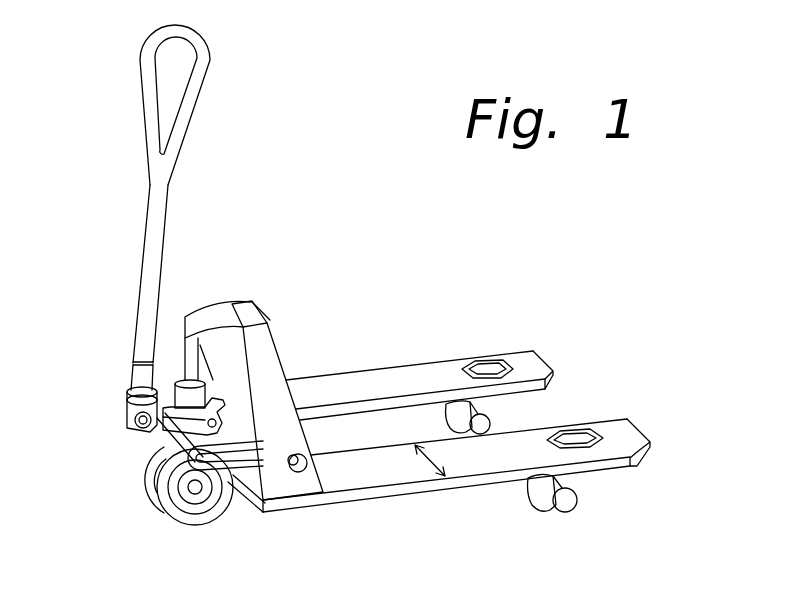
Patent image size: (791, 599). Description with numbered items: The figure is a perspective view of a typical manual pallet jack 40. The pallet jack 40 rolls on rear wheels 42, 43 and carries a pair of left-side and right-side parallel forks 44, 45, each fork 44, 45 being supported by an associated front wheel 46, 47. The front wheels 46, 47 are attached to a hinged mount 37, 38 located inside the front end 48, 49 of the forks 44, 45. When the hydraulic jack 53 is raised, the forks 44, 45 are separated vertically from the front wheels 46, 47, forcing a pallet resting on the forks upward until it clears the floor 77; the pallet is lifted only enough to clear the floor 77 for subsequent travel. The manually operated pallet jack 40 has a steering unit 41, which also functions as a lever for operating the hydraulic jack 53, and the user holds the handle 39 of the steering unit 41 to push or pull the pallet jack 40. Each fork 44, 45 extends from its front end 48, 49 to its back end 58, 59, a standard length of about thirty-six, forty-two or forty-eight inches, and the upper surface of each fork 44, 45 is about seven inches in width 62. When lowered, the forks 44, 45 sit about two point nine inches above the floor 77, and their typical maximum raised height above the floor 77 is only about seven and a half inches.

The handle 39 is at (212, 59).
The manual pallet jack 40 is at (279, 178).
The steering unit 41 is at (150, 213).
The hydraulic jack 53 is at (180, 357).
The back end of fork 58 is at (315, 392).
The left-side fork 44 is at (377, 387).
The front end of fork 48 is at (545, 350).
The hinged mount 37 is at (488, 403).
The front wheel 46 is at (485, 418).
The front end of fork 49 is at (643, 428).
The hinged mount 38 is at (567, 483).
The front wheel 47 is at (560, 511).
The right-side fork 45 is at (385, 472).
The width 62 is at (428, 452).
The back end of fork 59 is at (328, 475).
The rear wheel 42 is at (140, 457).
The rear wheel 43 is at (165, 507).
The floor 77 is at (646, 552).